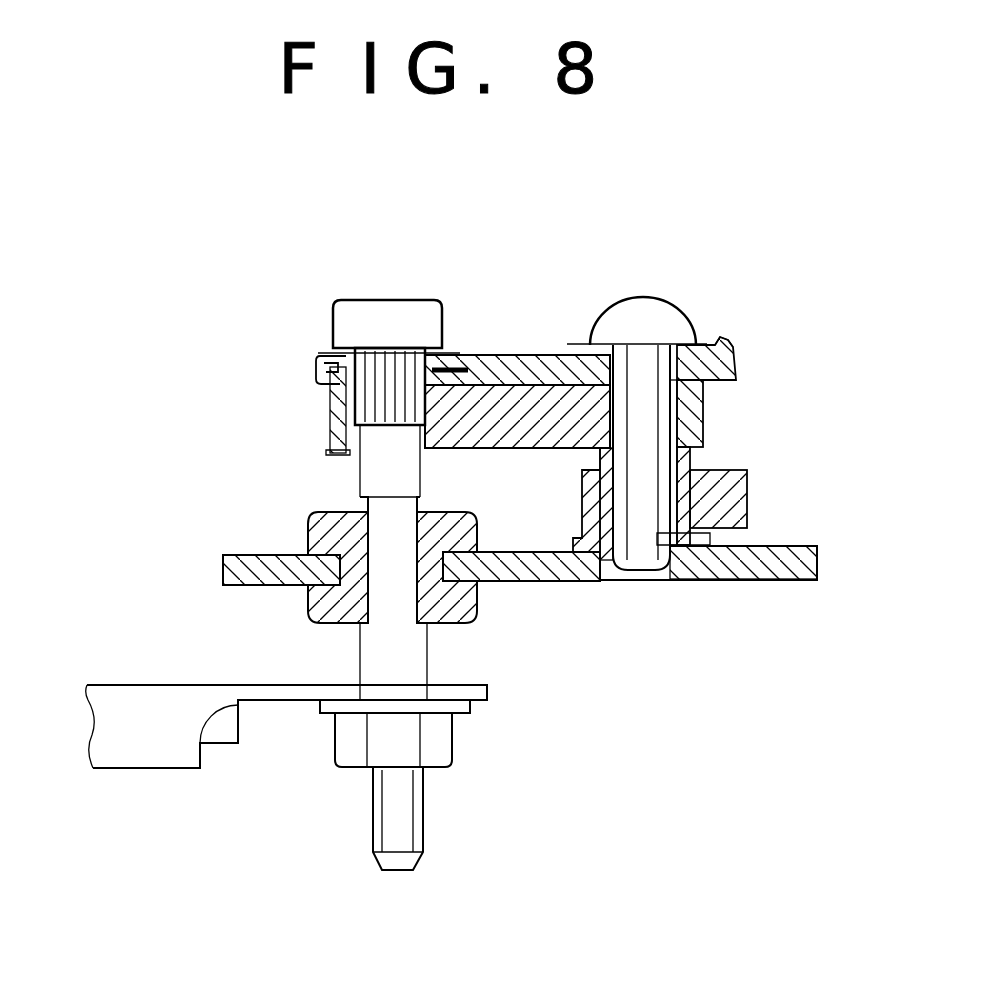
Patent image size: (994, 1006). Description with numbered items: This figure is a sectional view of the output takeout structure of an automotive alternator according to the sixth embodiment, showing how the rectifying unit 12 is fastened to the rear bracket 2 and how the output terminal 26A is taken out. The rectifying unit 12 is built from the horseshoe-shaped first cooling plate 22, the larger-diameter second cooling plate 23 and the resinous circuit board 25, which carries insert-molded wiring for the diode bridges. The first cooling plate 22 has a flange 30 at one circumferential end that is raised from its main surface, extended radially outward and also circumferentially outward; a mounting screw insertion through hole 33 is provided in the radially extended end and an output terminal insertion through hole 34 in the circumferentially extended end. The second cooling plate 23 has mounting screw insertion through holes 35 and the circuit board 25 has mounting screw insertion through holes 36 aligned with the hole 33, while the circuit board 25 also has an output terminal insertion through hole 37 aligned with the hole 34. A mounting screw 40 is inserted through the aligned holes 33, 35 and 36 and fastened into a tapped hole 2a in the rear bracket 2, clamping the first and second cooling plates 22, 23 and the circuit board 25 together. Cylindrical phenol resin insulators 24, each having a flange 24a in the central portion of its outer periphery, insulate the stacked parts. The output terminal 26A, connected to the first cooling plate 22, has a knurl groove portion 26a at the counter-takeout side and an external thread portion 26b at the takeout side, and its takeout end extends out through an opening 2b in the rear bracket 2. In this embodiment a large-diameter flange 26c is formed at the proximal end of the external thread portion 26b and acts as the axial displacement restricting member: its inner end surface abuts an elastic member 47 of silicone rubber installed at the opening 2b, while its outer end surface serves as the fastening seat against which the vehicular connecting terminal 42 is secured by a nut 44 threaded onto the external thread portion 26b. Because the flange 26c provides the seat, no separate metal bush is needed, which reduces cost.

The rear bracket 2 is at (736, 584).
The tapped hole 2a is at (650, 570).
The opening 2b is at (452, 512).
The rectifying unit 12 is at (738, 330).
The first cooling plate 22 is at (537, 412).
The second cooling plate 23 is at (580, 500).
The insulator 24 is at (610, 548).
The flange 24a is at (715, 458).
The circuit board 25 is at (746, 341).
The output terminal 26A is at (390, 296).
The knurl groove portion 26a is at (333, 438).
The external thread portion 26b is at (372, 802).
The large-diameter flange 26c is at (366, 658).
The flange 30 is at (485, 398).
The mounting screw insertion through hole 33 is at (703, 405).
The output terminal insertion through hole 34 is at (332, 405).
The mounting screw insertion through hole 35 is at (750, 500).
The mounting screw insertion through hole 36 is at (735, 365).
The output terminal insertion through hole 37 is at (318, 365).
The mounting screw 40 is at (652, 297).
The vehicular connecting terminal 42 is at (151, 684).
The nut 44 is at (455, 740).
The elastic member 47 is at (470, 600).